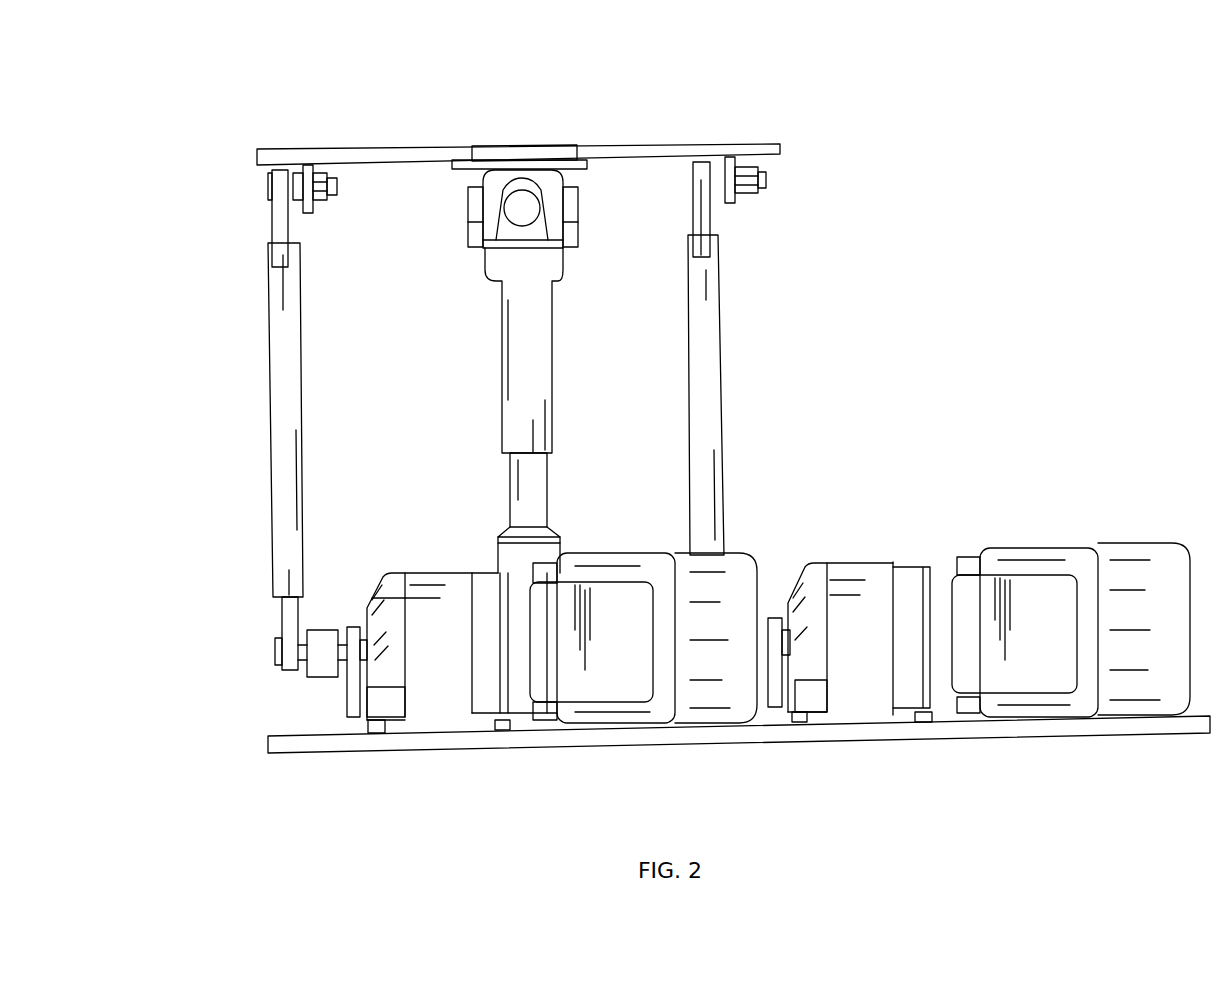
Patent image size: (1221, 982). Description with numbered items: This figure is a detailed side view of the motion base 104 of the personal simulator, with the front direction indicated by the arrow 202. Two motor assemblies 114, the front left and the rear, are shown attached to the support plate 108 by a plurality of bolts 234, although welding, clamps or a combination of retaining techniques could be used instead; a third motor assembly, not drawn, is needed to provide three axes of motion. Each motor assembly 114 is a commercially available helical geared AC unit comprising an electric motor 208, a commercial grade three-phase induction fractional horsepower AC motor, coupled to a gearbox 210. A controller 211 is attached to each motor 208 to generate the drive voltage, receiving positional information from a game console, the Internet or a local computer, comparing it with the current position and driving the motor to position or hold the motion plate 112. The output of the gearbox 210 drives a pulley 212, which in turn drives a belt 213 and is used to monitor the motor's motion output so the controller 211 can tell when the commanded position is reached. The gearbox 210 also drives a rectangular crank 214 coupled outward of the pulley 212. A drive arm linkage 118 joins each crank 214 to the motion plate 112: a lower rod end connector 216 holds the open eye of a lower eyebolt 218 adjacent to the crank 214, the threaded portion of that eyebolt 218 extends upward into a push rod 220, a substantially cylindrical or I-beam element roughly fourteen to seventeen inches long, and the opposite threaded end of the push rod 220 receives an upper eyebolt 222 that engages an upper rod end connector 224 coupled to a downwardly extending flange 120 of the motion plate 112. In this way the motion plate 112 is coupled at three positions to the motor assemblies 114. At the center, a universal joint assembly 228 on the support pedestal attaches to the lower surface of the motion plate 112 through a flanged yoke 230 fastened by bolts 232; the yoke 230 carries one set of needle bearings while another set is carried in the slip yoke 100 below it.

The slip yoke 100 is at (503, 341).
The motion base 104 is at (985, 294).
The support plate 108 is at (387, 746).
The motion plate 112 is at (780, 148).
The motor assembly 114 is at (612, 538).
The drive arm linkage 118 is at (805, 373).
The downwardly extending flange 120 is at (734, 204).
The front direction 202 is at (305, 88).
The electric motor 208 is at (593, 715).
The gearbox 210 is at (446, 573).
The controller 211 is at (596, 667).
The pulley 212 is at (350, 693).
The belt 213 is at (361, 632).
The crank 214 is at (318, 668).
The lower rod end connector 216 is at (274, 647).
The lower eyebolt 218 is at (280, 608).
The push rod 220 is at (268, 470).
The upper eyebolt 222 is at (268, 238).
The upper rod end connector 224 is at (343, 183).
The universal joint assembly 228 is at (484, 248).
The flanged yoke 230 is at (588, 165).
The bolts 232 is at (470, 147).
The bolts 234 is at (512, 730).